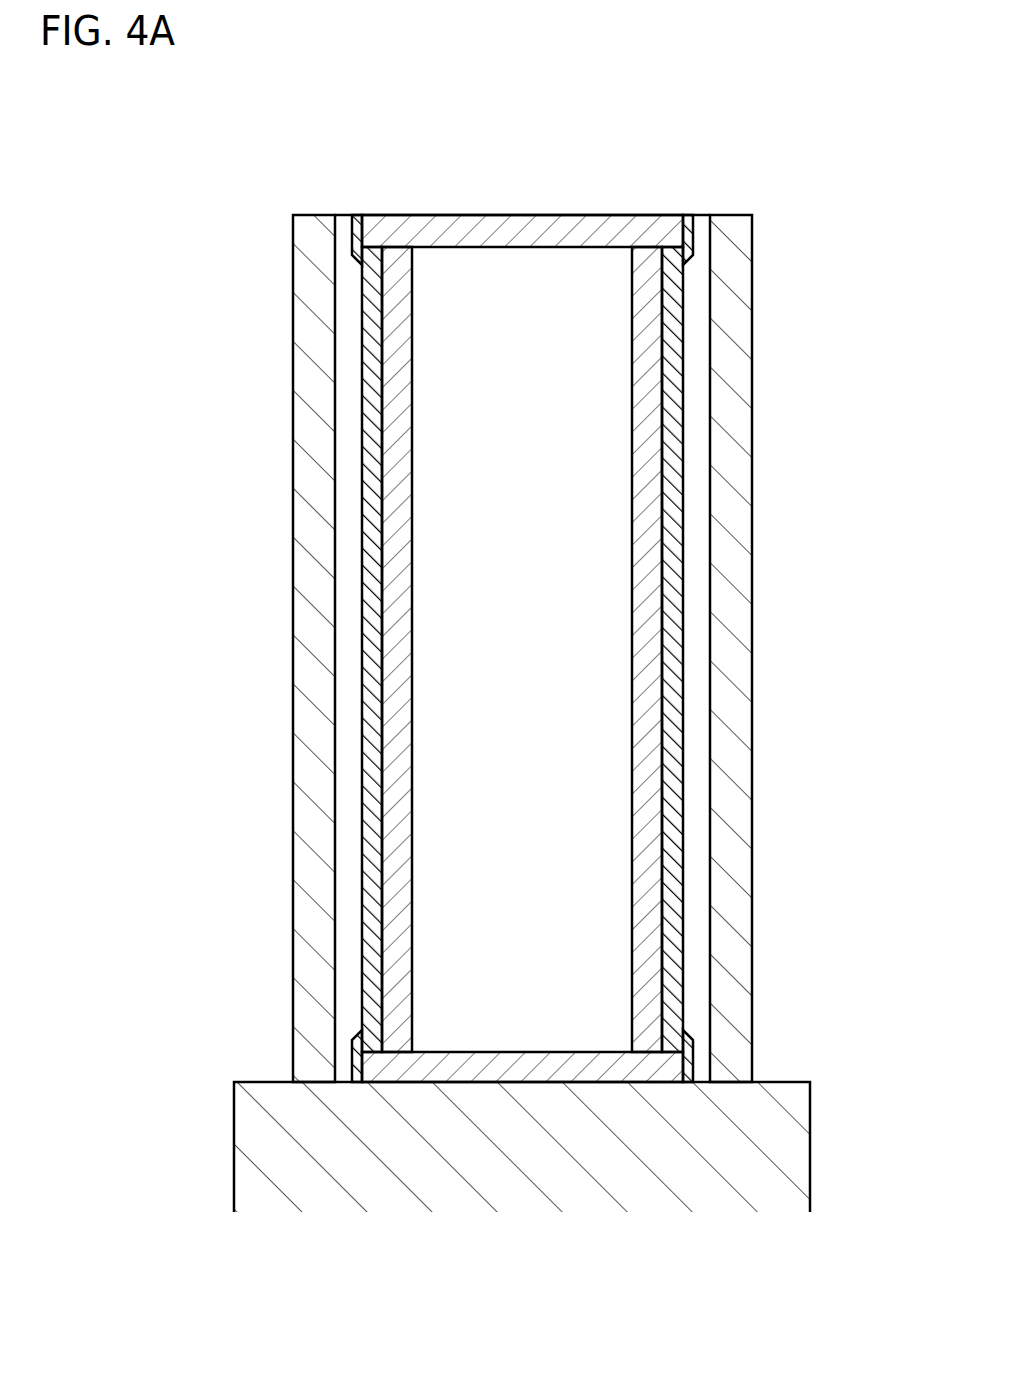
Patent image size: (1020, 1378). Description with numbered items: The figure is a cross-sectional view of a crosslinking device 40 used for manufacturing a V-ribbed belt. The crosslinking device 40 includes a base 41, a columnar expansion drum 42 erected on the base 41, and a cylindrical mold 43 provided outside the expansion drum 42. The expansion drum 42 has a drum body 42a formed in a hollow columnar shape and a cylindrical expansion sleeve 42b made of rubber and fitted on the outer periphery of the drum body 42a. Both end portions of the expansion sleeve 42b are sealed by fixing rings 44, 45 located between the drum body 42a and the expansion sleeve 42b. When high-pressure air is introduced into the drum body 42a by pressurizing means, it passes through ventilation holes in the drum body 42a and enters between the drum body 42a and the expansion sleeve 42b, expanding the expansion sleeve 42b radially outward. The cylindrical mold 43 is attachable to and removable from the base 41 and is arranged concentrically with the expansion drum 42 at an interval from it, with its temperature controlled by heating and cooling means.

The crosslinking device 40 is at (523, 585).
The base 41 is at (785, 1131).
The expansion drum 42 is at (631, 527).
The drum body 42a is at (404, 378).
The expansion sleeve 42b is at (673, 689).
The cylindrical mold 43 is at (733, 461).
The fixing ring 44 is at (689, 238).
The fixing ring 45 is at (350, 1068).